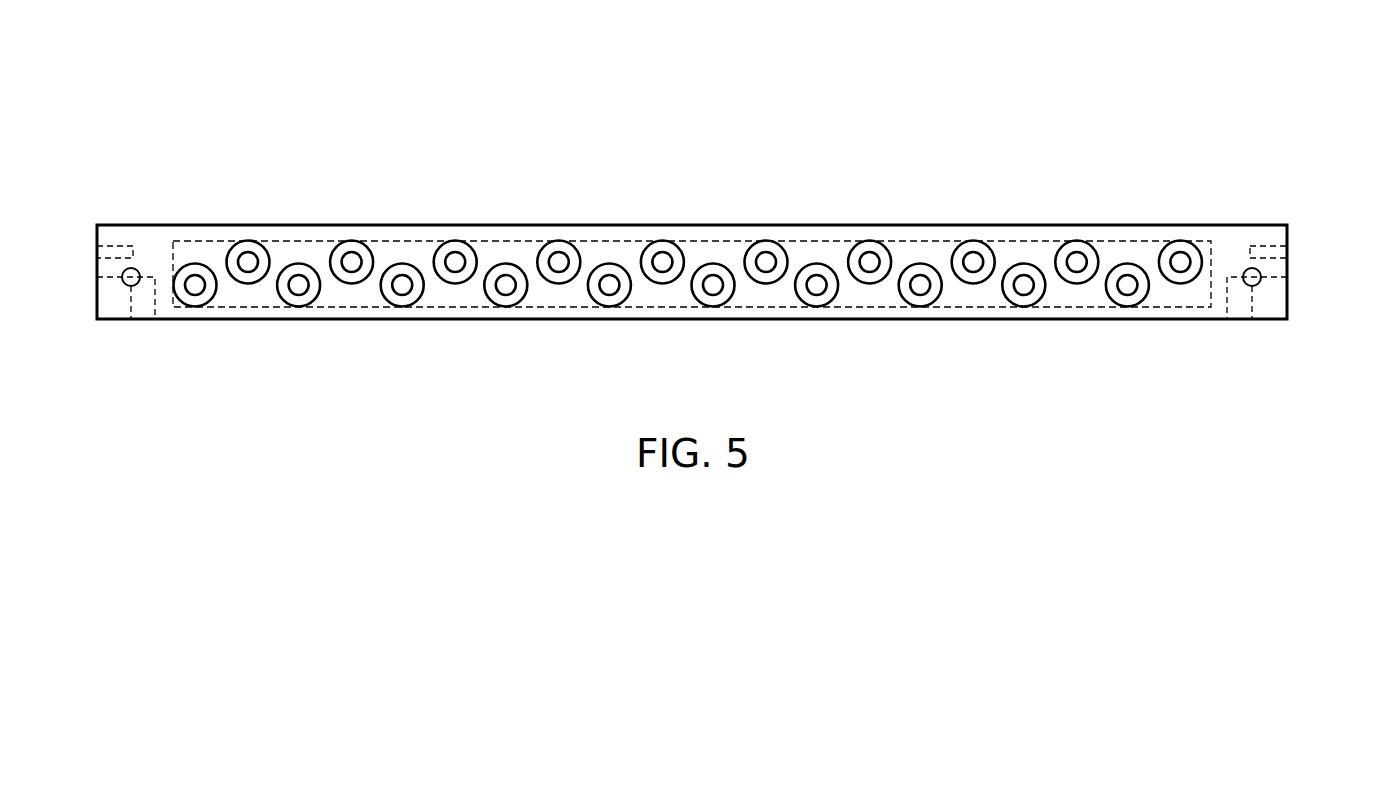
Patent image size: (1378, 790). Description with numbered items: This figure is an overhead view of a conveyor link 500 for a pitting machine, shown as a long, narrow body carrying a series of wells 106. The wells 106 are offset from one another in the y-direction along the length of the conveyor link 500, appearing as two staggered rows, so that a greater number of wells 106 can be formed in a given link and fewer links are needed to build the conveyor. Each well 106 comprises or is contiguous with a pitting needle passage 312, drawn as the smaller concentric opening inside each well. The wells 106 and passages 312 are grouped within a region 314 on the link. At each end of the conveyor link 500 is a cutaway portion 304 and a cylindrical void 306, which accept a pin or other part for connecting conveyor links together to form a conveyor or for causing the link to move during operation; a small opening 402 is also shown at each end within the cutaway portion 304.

The conveyor link 500 is at (1132, 153).
The active area / emitter region 314 is at (233, 308).
The well 106 is at (1018, 297).
The pitting needle passage 312 is at (1132, 287).
The cylindrical void 306 is at (108, 252).
The cutaway portion 304 is at (108, 302).
The mounting hole 402 is at (133, 268).